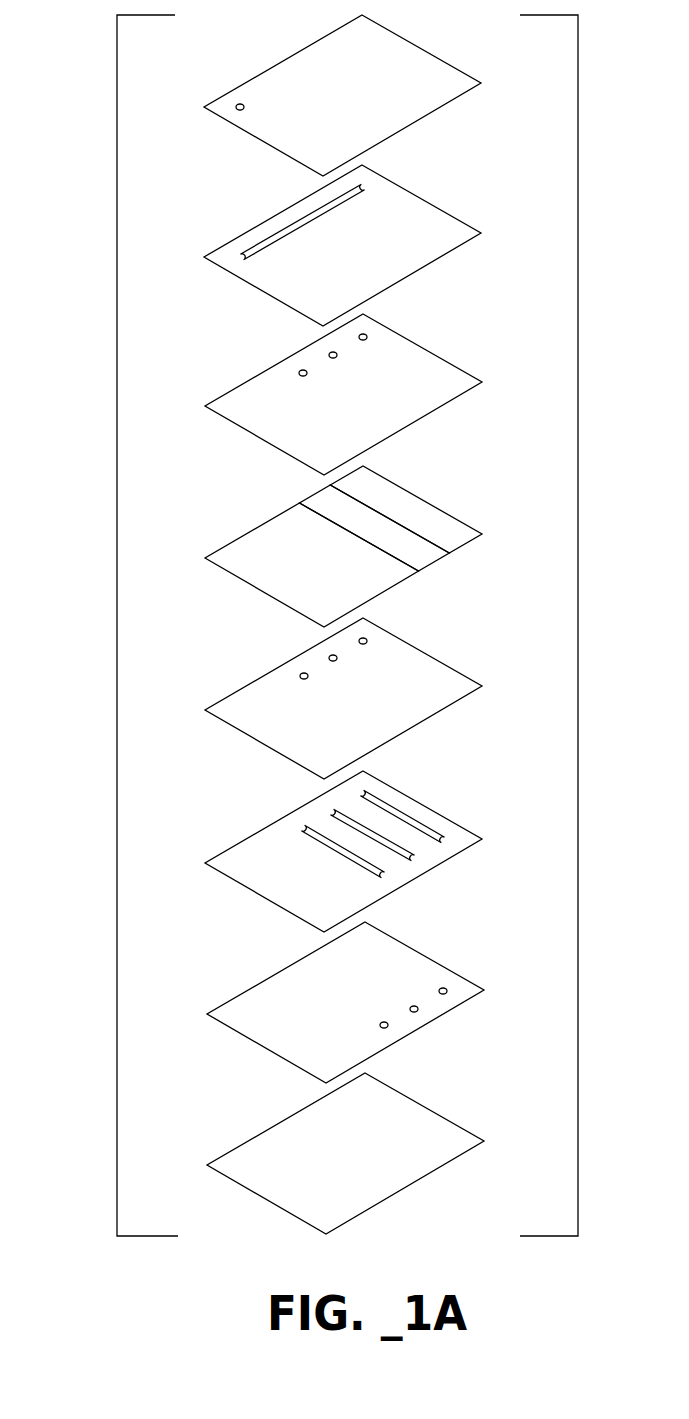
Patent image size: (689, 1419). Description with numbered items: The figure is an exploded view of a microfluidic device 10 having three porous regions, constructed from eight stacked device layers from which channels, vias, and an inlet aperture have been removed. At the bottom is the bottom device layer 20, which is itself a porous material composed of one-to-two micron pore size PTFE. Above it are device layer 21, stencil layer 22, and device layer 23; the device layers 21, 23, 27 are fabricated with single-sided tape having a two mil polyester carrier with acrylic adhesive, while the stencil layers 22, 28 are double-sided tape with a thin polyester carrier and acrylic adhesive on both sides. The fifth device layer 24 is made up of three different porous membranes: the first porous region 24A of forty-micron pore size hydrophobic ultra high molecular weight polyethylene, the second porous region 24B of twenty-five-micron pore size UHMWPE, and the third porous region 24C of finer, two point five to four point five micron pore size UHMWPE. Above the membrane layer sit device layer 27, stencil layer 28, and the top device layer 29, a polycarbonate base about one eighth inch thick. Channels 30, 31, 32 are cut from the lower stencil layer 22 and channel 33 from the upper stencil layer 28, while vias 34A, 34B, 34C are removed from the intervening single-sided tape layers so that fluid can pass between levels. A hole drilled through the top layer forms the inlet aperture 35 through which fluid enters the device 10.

The microfluidic device 10 is at (118, 685).
The bottom device layer 20 is at (460, 1137).
The device layer 21 is at (460, 992).
The stencil layer 22 is at (458, 838).
The device layer 23 is at (455, 683).
The fifth device layer 24 is at (350, 542).
The first porous region 24A is at (247, 540).
The second porous region 24B is at (313, 497).
The third porous region 24C is at (393, 498).
The device layer 27 is at (451, 372).
The stencil layer 28 is at (455, 233).
The top device layer 29 is at (458, 78).
The channel 30 is at (301, 826).
The channel 31 is at (330, 810).
The channel 32 is at (385, 803).
The channel 33 is at (262, 243).
The vias 34A is at (300, 369).
The vias 34B is at (302, 672).
The vias 34C is at (388, 1026).
The inlet aperture 35 is at (238, 104).